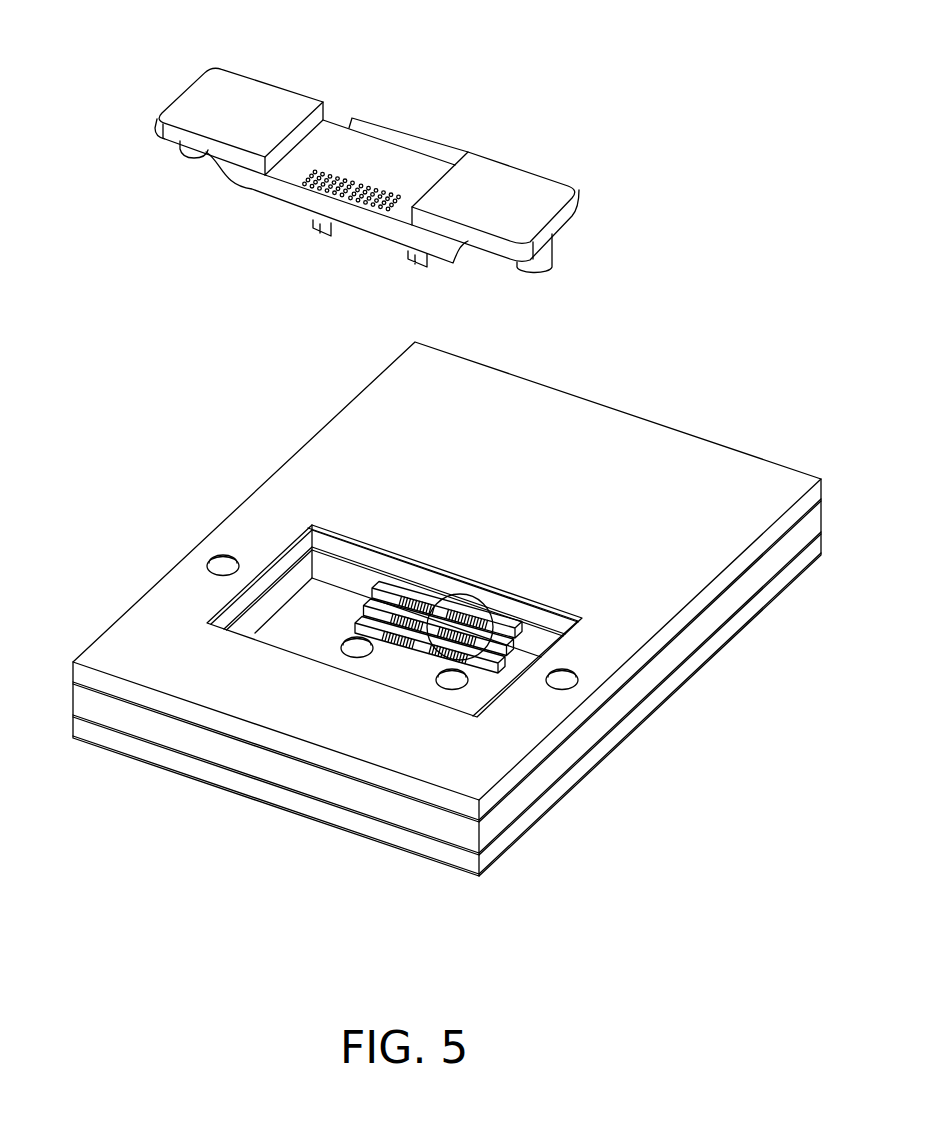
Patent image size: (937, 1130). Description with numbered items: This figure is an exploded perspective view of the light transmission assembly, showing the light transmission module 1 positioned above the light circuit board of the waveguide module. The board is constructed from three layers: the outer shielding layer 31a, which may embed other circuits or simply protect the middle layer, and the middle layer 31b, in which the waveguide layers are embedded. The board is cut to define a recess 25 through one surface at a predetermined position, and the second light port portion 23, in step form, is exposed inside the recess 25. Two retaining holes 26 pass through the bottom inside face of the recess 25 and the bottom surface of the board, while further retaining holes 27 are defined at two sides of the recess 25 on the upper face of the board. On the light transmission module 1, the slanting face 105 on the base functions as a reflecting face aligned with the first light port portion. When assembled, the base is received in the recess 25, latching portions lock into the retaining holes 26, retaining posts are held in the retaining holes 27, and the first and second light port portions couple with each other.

The light transmission module 1 is at (367, 153).
The slanting face 105 is at (377, 231).
The recess 25 is at (313, 590).
The shielding layer 31a is at (295, 553).
The middle layer 31b is at (270, 598).
The second light port portion 23 is at (497, 642).
The retaining holes 26 is at (453, 680).
The retaining holes 27 is at (563, 683).